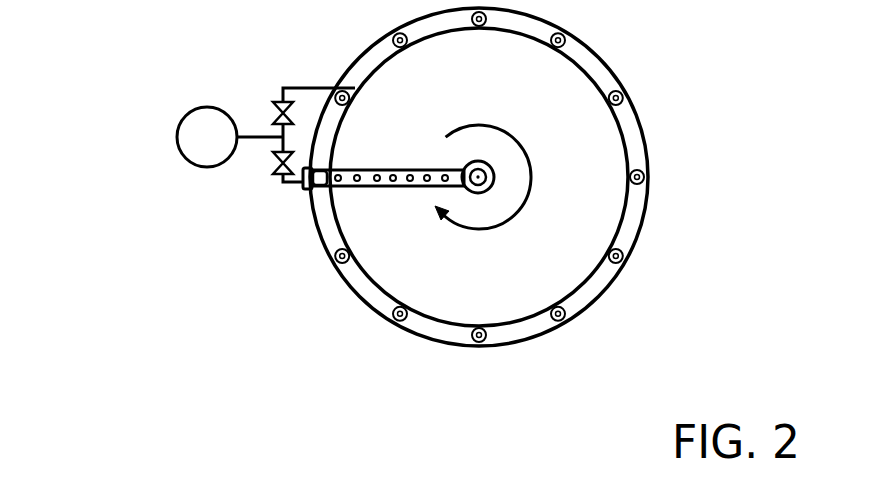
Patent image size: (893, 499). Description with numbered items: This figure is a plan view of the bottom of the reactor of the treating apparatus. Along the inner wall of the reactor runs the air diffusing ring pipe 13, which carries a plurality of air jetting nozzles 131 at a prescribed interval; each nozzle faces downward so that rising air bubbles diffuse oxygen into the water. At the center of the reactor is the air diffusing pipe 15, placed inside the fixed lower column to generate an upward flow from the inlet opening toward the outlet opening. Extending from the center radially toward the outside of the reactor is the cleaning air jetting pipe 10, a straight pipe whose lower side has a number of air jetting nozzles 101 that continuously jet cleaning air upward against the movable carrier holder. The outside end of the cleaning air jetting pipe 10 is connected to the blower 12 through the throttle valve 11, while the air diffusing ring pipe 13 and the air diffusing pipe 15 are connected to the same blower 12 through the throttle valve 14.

The cleaning air jetting pipe 10 is at (357, 187).
The air jetting nozzles 101 is at (410, 173).
The throttle valve 11 is at (277, 167).
The blower 12 is at (177, 142).
The air diffusing ring pipe 13 is at (535, 327).
The air jetting nozzles 131 is at (622, 95).
The throttle valve 14 is at (275, 112).
The air diffusing pipe 15 is at (495, 183).